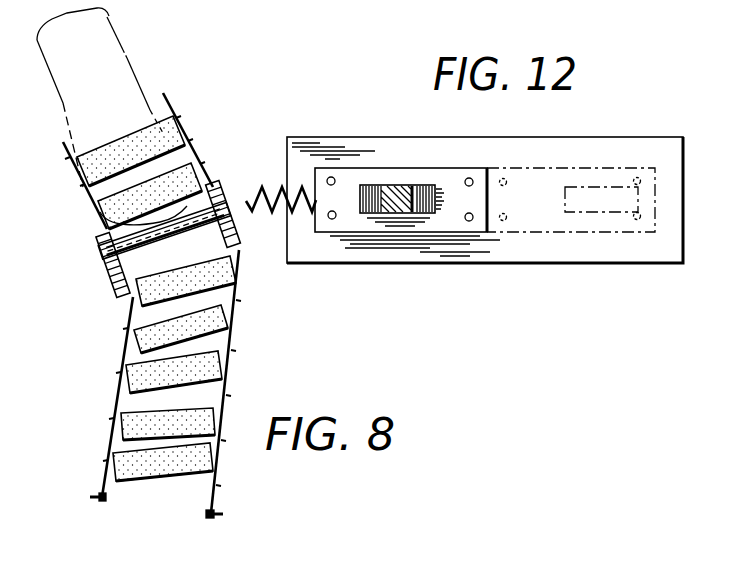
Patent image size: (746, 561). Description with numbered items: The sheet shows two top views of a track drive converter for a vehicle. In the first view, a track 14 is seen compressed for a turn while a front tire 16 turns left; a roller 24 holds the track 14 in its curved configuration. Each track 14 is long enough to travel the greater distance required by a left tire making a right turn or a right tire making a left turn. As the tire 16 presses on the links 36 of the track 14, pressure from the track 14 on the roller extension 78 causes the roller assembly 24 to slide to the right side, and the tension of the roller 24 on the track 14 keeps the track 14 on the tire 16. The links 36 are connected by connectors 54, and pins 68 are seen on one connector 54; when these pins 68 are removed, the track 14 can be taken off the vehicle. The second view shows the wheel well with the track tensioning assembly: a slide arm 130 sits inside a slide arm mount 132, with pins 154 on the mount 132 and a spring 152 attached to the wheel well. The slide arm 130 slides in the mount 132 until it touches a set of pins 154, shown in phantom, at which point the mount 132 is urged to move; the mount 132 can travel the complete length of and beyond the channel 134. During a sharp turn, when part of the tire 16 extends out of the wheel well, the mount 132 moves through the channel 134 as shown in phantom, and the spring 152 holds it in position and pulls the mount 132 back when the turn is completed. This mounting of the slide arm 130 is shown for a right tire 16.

In FIG. 8, the track 14 is at (108, 373).
In FIG. 8, the front tire 16 is at (127, 58).
In FIG. 8, the roller 24 is at (113, 270).
In FIG. 8, the links 36 is at (100, 212).
In FIG. 8, the connectors 54 is at (108, 443).
In FIG. 8, the pins 68 is at (92, 497).
In FIG. 8, the roller extension 78 is at (213, 197).
In FIG. 12, the slide arm 130 is at (388, 215).
In FIG. 12, the slide arm mount 132 is at (458, 247).
In FIG. 12, the channel 134 is at (410, 154).
In FIG. 12, the spring 152 is at (273, 212).
In FIG. 12, the pins 154 is at (471, 178).